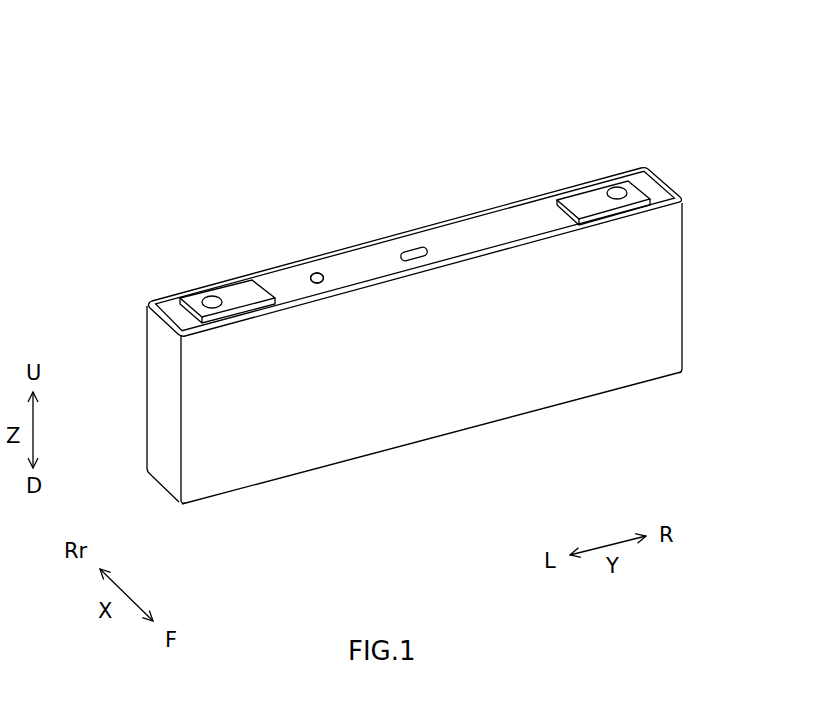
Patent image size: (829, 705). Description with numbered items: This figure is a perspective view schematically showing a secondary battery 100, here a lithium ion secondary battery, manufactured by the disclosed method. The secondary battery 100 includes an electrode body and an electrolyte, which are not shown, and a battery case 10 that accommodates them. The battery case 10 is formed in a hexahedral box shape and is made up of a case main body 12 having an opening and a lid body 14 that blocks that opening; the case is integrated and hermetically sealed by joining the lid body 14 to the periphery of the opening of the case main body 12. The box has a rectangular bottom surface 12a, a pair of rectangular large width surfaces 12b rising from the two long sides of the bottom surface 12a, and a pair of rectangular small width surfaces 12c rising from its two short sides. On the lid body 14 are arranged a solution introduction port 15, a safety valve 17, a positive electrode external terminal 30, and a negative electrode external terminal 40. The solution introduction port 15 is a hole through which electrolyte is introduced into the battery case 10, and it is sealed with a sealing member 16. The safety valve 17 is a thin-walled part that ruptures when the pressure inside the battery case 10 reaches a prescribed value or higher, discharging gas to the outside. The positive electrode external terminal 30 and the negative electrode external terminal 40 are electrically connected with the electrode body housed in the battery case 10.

The secondary battery 100 is at (594, 86).
The battery case 10 is at (533, 143).
The case main body 12 is at (527, 276).
The bottom surface 12a is at (393, 454).
The large width surfaces 12b is at (388, 235).
The small width surfaces 12c is at (157, 460).
The lid body 14 is at (484, 230).
The solution introduction port 15 is at (324, 268).
The sealing member 16 is at (317, 273).
The safety valve 17 is at (416, 245).
The positive electrode external terminal 30 is at (210, 296).
The negative electrode external terminal 40 is at (617, 187).